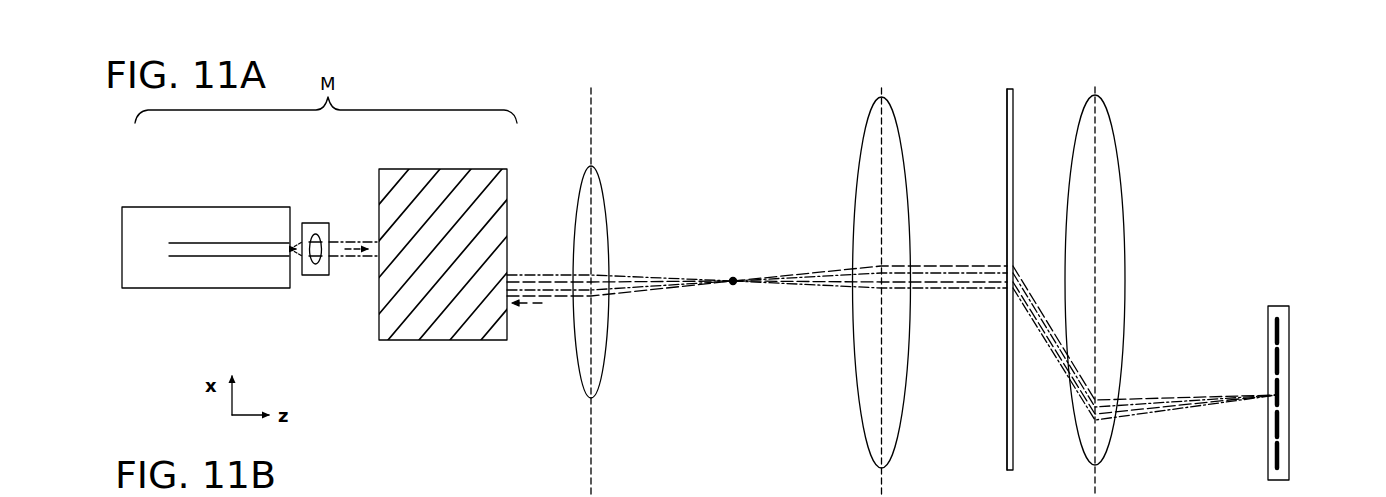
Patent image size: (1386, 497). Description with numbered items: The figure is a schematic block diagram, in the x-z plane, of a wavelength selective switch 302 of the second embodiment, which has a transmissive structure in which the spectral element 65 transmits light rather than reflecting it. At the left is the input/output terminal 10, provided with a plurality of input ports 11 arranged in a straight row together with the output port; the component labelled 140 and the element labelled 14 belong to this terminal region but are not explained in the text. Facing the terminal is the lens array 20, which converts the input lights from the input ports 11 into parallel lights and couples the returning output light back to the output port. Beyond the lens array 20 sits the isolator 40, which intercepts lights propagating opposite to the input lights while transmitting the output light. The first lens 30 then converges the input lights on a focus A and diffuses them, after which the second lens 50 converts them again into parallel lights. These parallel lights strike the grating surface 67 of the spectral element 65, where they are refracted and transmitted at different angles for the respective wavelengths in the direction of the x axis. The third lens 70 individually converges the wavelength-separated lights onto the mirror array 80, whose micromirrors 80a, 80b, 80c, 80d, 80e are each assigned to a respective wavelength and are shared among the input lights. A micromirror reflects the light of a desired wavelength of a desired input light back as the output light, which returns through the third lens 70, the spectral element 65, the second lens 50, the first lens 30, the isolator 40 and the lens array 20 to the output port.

The input/output terminal 10 is at (291, 289).
The input port 11 is at (288, 247).
The lens 14 is at (179, 243).
The light source 140 is at (218, 207).
The lens array 20 is at (316, 223).
The isolator 40 is at (449, 169).
The first lens 30 is at (594, 168).
The focus A is at (737, 277).
The second lens 50 is at (884, 98).
The spectral element 65 is at (1007, 123).
The grating surface 67 is at (1003, 151).
The third lens 70 is at (1098, 98).
The wavelength selective switch 302 is at (1219, 87).
The mirror array 80 is at (1268, 471).
The micromirror 80a is at (1281, 331).
The micromirror 80b is at (1281, 361).
The micromirror 80c is at (1281, 392).
The micromirror 80d is at (1281, 423).
The micromirror 80e is at (1281, 454).